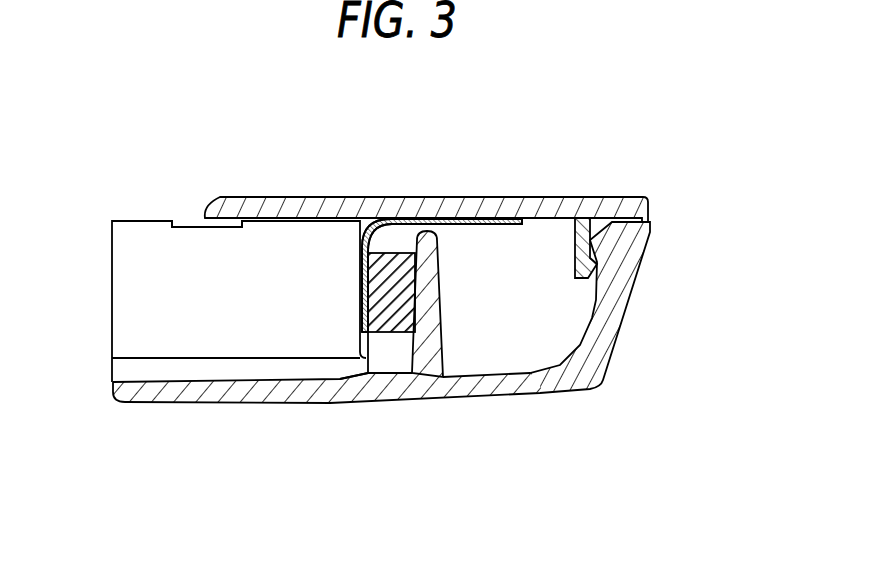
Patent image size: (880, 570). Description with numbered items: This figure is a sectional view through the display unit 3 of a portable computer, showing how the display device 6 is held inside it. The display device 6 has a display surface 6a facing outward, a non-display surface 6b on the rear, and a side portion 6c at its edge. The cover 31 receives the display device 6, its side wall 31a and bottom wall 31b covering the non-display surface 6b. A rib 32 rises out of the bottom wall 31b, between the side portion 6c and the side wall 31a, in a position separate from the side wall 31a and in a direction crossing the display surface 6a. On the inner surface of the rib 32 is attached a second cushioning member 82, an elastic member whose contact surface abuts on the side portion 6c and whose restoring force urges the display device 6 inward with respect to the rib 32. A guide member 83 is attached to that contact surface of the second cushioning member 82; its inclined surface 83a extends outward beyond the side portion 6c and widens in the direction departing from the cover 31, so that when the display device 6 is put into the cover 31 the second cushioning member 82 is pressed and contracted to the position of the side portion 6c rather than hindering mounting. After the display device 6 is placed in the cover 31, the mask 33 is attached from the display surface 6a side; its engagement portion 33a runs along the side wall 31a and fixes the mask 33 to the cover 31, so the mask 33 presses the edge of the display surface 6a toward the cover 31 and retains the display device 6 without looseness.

The display unit 3 is at (403, 293).
The display device 6 is at (138, 295).
The display surface 6a is at (135, 221).
The non-display surface 6b is at (155, 360).
The side portion 6c is at (360, 382).
The cover 31 is at (289, 410).
The side wall 31a is at (652, 232).
The bottom wall 31b is at (472, 392).
The rib 32 is at (443, 325).
The mask 33 is at (337, 200).
The engagement portion 33a is at (590, 282).
The second cushioning member 82 is at (390, 325).
The guide member 83 is at (495, 225).
The inclined surface 83a is at (388, 222).